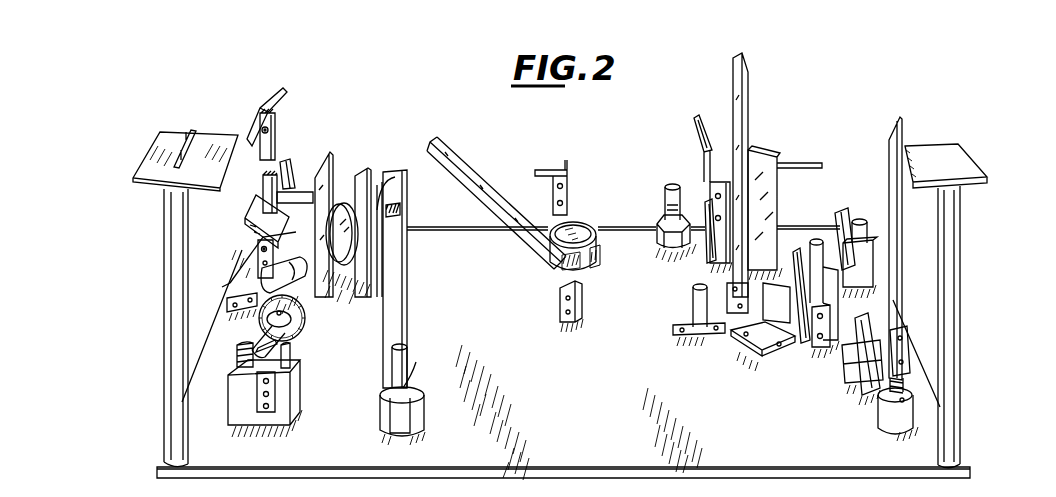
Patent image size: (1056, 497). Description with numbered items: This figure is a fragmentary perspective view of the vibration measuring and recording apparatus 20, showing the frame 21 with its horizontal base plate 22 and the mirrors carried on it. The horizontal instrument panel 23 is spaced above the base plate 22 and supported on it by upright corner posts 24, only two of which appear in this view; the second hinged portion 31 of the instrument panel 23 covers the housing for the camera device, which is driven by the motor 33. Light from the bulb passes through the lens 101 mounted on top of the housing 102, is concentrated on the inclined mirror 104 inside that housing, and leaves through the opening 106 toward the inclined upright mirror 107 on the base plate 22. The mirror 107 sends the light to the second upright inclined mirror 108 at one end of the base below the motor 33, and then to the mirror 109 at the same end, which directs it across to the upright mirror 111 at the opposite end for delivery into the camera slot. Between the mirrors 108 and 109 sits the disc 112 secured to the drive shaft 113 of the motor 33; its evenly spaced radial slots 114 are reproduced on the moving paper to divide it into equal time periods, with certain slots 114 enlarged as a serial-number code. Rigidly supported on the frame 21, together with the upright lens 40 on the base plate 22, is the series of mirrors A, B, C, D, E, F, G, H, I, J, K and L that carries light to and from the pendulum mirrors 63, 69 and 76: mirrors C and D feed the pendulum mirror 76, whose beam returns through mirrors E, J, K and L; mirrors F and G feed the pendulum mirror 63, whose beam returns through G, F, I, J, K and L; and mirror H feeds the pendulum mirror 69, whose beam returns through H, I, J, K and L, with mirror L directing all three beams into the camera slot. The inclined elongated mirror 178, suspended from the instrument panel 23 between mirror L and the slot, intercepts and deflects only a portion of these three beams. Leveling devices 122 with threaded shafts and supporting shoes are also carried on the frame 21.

The vibration measuring and recording apparatus 20 is at (561, 131).
The frame 21 is at (571, 327).
The base plate 22 is at (600, 470).
The instrument panel 23 is at (152, 138).
The upright corner posts 24 is at (162, 313).
The second hinged portion 31 is at (212, 138).
The motor 33 is at (258, 283).
The upright lens 40 is at (400, 299).
The pendulum mirror 63 is at (797, 244).
The pendulum mirror 69 is at (858, 224).
The pendulum mirror 76 is at (698, 137).
The lens 101 is at (576, 230).
The housing 102 is at (592, 237).
The inclined mirror 104 is at (585, 270).
The opening 106 is at (600, 250).
The inclined upright mirror 107 is at (560, 300).
The second upright inclined mirror 108 is at (302, 304).
The mirror 109 is at (305, 380).
The upright mirror 111 is at (876, 325).
The disc 112 is at (262, 346).
The drive shaft 113 is at (262, 354).
The slots 114 is at (300, 343).
The leveling devices 122 is at (437, 333).
The inclined elongated mirror 178 is at (470, 170).
The mirror A is at (275, 96).
The mirror B is at (250, 212).
The mirror C is at (705, 216).
The mirror D is at (561, 160).
The mirror E is at (292, 160).
The mirror F is at (765, 146).
The mirror G is at (766, 341).
The mirror H is at (846, 212).
The mirror I is at (366, 165).
The mirror J is at (732, 75).
The mirror K is at (330, 155).
The mirror L is at (888, 148).